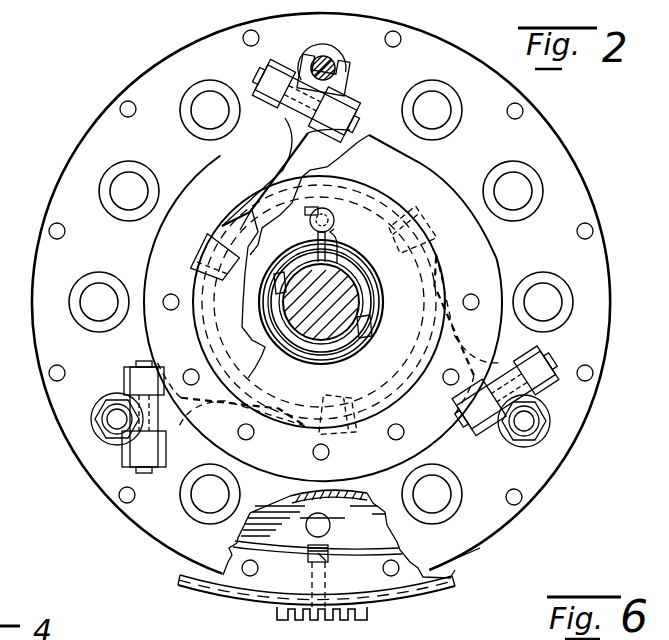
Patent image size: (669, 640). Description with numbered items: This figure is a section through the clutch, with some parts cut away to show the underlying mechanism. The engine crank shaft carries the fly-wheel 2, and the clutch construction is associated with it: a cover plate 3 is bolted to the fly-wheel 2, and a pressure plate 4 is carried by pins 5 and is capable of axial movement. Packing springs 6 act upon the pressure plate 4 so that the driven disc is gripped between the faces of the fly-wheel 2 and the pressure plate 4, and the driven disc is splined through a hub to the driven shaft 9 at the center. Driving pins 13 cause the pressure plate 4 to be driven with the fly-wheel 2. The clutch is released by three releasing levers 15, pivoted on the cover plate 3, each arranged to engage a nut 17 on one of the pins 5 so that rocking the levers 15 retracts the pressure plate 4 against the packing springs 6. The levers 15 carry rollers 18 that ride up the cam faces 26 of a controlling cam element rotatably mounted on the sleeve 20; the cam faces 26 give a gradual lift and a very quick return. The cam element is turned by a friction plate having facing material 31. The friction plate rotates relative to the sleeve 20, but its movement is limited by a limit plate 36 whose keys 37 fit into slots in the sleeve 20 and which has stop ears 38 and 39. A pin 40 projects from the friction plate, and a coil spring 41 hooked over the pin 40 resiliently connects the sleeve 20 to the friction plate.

The fly-wheel 2 is at (370, 590).
The cover plate 3 is at (185, 58).
The pressure plate 4 is at (375, 540).
The pins 5 is at (330, 60).
The packing springs 6 is at (203, 124).
The driven shaft 9 is at (302, 300).
The driving pins 13 is at (328, 552).
The releasing levers 15 is at (254, 172).
The nut 17 is at (98, 430).
The rollers 18 is at (190, 262).
The sleeve 20 is at (360, 281).
The cam faces 26 is at (402, 190).
The facing material 31 is at (419, 437).
The limit plate 36 is at (352, 357).
The keys 37 is at (368, 323).
The stop ear 38 is at (253, 340).
The stop ear 39 is at (300, 212).
The pin 40 is at (333, 212).
The coil spring 41 is at (340, 250).